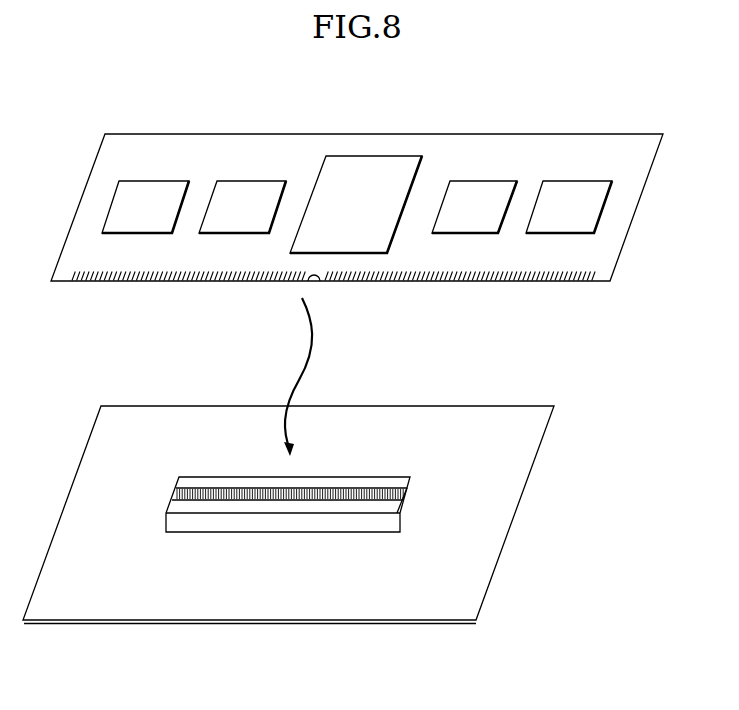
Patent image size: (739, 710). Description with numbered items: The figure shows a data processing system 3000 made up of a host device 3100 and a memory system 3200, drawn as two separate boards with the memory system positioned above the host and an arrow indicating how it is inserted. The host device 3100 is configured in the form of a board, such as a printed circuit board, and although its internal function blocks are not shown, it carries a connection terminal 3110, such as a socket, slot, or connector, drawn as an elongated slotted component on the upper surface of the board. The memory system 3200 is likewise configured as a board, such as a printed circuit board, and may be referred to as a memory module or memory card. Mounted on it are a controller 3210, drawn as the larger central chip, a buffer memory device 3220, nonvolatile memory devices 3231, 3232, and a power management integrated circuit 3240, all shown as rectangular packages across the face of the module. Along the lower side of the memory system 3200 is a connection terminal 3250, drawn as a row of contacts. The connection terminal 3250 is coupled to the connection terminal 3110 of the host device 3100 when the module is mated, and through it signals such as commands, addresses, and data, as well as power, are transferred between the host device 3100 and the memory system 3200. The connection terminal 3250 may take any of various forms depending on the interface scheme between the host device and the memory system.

The data processing system 3000 is at (208, 98).
The host device 3100 is at (288, 515).
The connection terminal 3110 is at (432, 472).
The memory system 3200 is at (357, 207).
The controller 3210 is at (356, 204).
The buffer memory device 3220 is at (242, 207).
The nonvolatile memory device 3231 is at (474, 207).
The nonvolatile memory device 3232 is at (569, 207).
The power management integrated circuit 3240 is at (145, 207).
The connection terminal 3250 is at (82, 281).